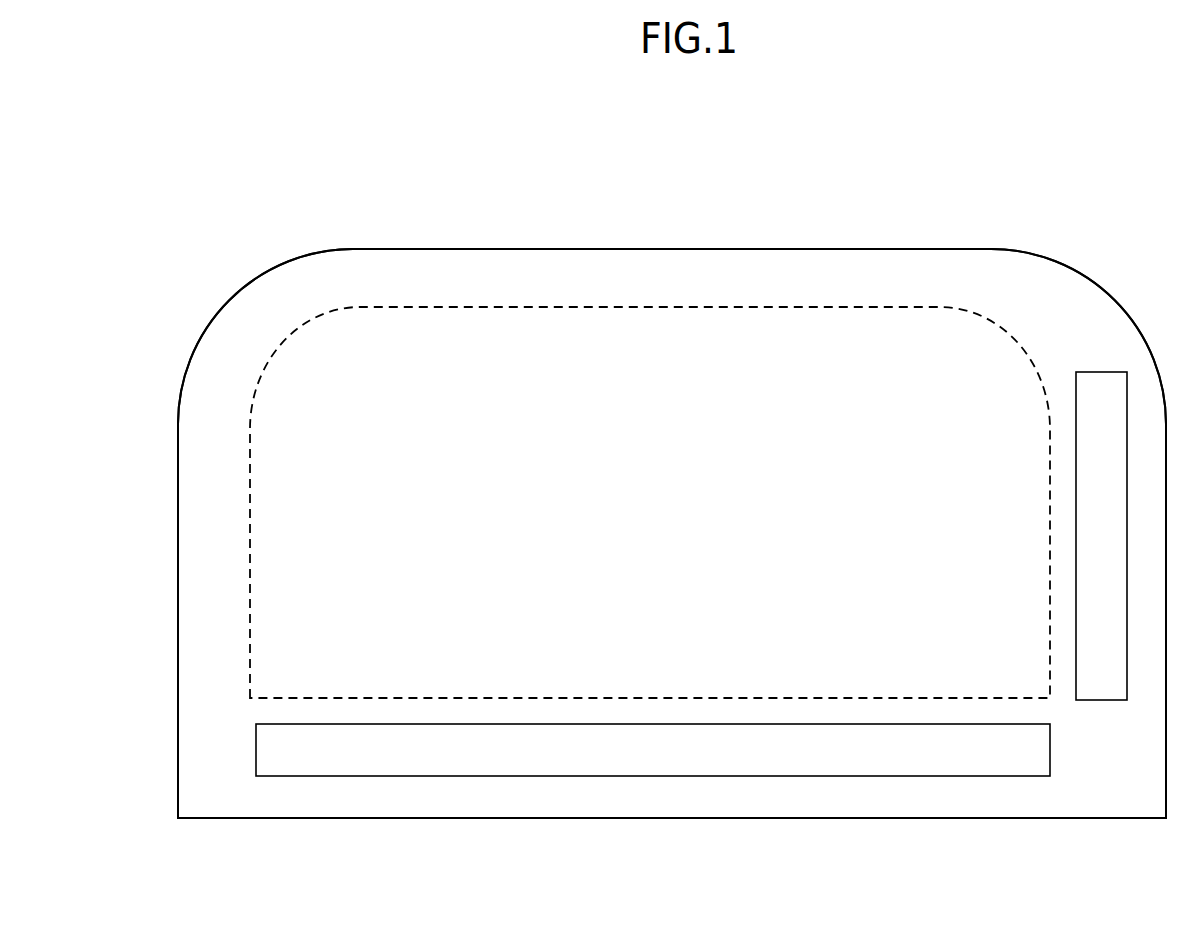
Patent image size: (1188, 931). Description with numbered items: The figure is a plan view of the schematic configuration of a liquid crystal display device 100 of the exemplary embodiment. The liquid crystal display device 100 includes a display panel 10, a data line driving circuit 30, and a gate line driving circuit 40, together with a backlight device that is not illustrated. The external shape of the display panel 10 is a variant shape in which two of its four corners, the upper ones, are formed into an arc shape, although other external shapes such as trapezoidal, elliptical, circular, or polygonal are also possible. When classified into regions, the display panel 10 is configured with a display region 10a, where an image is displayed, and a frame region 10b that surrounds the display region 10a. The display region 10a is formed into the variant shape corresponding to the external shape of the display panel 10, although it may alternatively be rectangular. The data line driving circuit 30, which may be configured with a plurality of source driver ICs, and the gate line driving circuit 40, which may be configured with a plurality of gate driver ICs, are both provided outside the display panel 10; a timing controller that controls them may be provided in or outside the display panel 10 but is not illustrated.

The liquid crystal display device 100 is at (1090, 213).
The display panel 10 is at (935, 249).
The display region 10a is at (915, 307).
The frame region 10b is at (673, 268).
The data line driving circuit 30 is at (1050, 757).
The gate line driving circuit 40 is at (1083, 372).